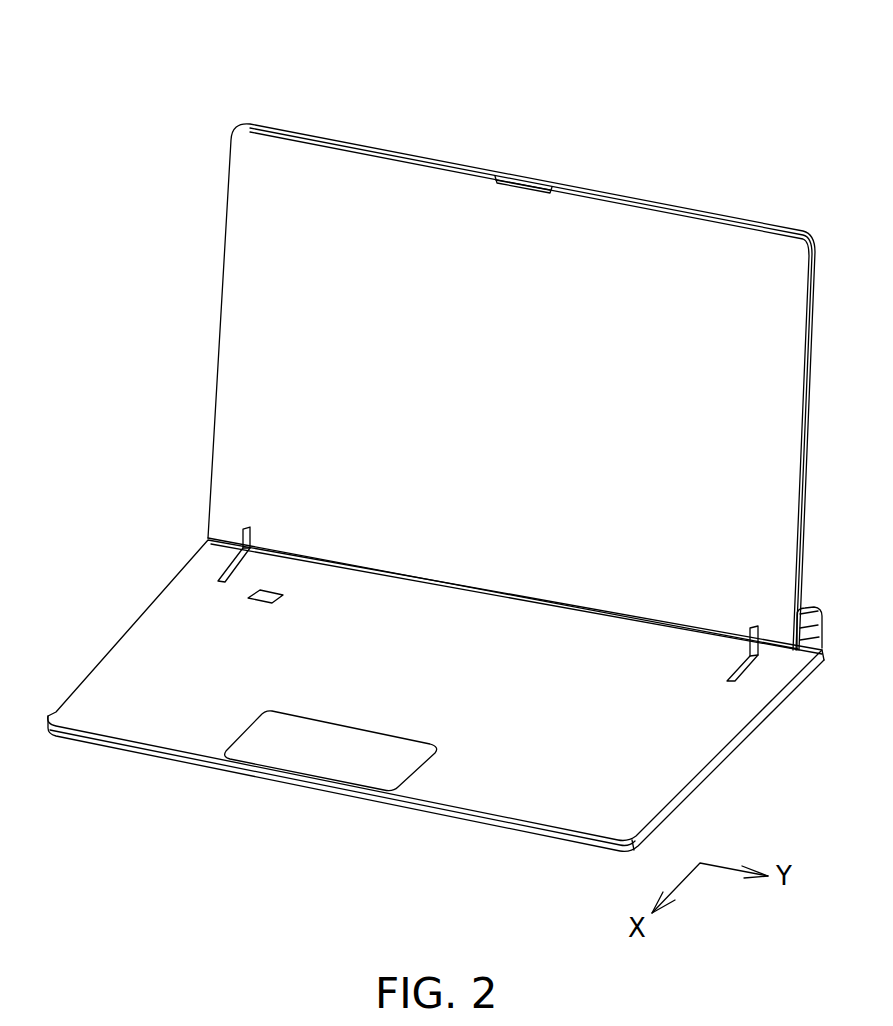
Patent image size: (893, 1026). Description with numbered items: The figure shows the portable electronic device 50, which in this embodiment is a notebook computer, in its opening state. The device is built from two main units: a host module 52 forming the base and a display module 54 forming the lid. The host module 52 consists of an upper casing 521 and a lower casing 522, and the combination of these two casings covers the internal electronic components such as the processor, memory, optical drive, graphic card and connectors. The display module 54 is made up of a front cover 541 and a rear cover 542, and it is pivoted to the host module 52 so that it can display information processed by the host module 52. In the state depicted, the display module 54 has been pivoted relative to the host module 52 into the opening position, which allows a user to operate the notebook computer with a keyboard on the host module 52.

The portable electronic device 50 is at (436, 461).
The host module 52 is at (436, 714).
The upper casing 521 is at (182, 712).
The lower casing 522 is at (232, 830).
The display module 54 is at (442, 387).
The front cover 541 is at (251, 333).
The rear cover 542 is at (221, 279).